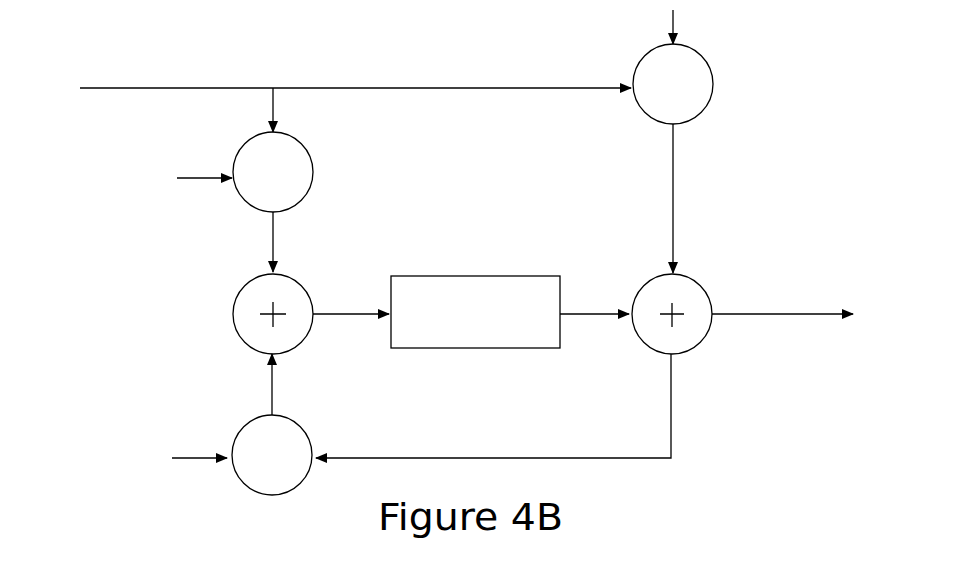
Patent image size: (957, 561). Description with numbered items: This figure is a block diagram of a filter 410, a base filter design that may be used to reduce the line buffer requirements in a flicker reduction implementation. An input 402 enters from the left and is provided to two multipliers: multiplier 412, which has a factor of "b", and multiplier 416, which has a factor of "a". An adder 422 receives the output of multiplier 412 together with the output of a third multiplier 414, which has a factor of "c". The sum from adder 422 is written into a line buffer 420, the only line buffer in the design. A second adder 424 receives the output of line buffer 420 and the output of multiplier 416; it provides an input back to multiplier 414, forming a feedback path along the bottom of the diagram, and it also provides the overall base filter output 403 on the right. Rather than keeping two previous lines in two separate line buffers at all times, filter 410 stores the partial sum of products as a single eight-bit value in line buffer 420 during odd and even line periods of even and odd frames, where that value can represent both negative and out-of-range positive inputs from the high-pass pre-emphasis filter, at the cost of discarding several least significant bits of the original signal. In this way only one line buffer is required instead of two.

The filter 410 is at (312, 54).
The input 402 is at (143, 88).
The multiplier 412 is at (305, 140).
The adder 422 is at (300, 283).
The line buffer 420 is at (425, 276).
The multiplier 416 is at (644, 113).
The adder 424 is at (645, 348).
The base filter output 403 is at (767, 314).
The multiplier 414 is at (295, 420).